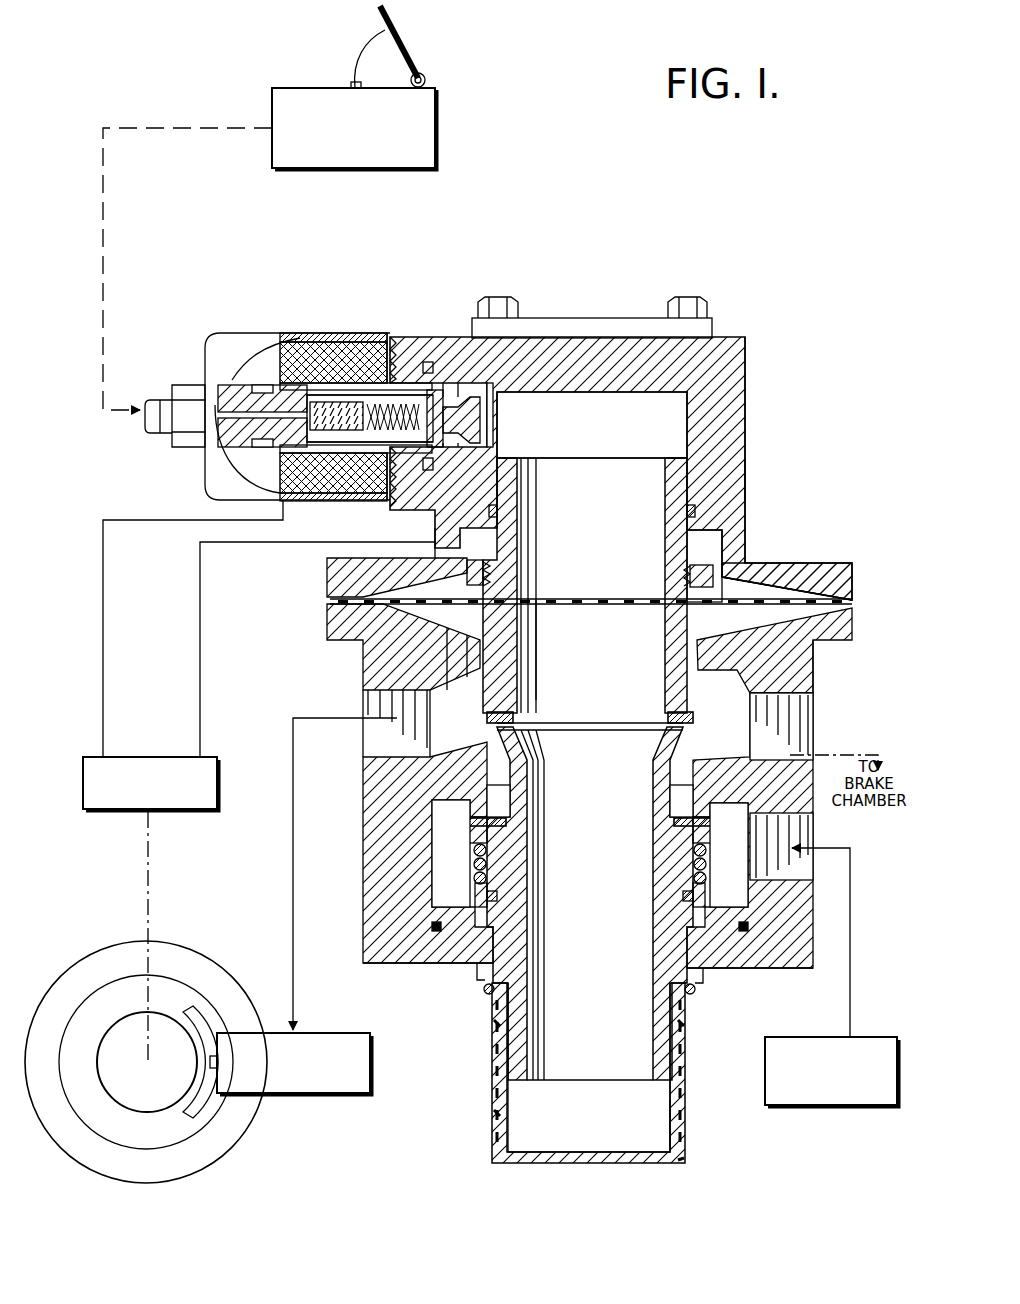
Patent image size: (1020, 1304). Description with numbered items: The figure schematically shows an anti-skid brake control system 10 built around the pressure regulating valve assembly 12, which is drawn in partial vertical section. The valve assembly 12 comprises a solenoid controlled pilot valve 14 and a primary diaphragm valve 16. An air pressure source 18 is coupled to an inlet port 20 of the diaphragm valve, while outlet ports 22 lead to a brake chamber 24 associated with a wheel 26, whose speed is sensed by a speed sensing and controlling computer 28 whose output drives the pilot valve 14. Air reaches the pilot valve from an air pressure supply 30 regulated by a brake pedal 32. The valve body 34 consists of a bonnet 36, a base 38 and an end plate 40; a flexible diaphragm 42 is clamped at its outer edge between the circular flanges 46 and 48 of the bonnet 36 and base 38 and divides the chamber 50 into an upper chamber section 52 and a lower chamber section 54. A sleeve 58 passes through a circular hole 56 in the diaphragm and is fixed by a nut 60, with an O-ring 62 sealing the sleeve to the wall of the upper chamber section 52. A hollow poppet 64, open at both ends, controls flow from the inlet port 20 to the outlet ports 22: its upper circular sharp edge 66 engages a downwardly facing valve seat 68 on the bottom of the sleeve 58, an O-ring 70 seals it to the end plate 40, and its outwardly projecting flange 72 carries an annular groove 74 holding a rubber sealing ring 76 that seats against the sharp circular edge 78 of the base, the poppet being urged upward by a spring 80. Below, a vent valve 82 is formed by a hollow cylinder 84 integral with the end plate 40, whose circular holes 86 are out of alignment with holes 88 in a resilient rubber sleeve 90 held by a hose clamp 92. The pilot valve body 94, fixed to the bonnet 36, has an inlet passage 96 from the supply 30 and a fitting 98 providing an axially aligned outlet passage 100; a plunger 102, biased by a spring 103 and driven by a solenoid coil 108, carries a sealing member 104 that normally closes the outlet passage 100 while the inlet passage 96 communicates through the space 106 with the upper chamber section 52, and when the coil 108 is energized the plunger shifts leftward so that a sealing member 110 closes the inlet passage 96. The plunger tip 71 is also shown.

The anti-skid brake control system 10 is at (626, 262).
The pressure regulating valve assembly 12 is at (750, 358).
The solenoid controlled pilot valve 14 is at (270, 330).
The primary diaphragm valve 16 is at (776, 548).
The air pressure source 18 is at (893, 1013).
The inlet port 20 is at (805, 834).
The outlet ports 22 is at (380, 748).
The brake chamber 24 is at (366, 1013).
The wheel 26 is at (222, 1140).
The speed sensing and controlling computer 28 is at (178, 812).
The air pressure supply 30 is at (298, 67).
The brake pedal 32 is at (396, 32).
The valve body 34 is at (752, 410).
The bonnet 36 is at (748, 478).
The base 38 is at (815, 938).
The end plate 40 is at (780, 972).
The flexible diaphragm 42 is at (757, 603).
The circular flange of the bonnet 46 is at (853, 588).
The circular flange of the base 48 is at (835, 640).
The chamber 50 is at (660, 438).
The upper chamber section 52 is at (707, 545).
The lower chamber section 54 is at (742, 620).
The circular hole 56 is at (506, 602).
The sleeve 58 is at (512, 650).
The nut 60 is at (492, 565).
The O-ring 62 is at (686, 512).
The poppet 64 is at (672, 788).
The upper circular sharp edge 66 is at (586, 726).
The valve seat 68 is at (688, 722).
The O-ring 70 is at (497, 897).
The plunger tip 71 is at (462, 412).
The outwardly projecting flange 72 is at (708, 848).
The annular groove 74 is at (490, 838).
The rubber sealing ring 76 is at (702, 828).
The sharp circular edge 78 is at (500, 815).
The spring 80 is at (472, 862).
The vent valve 82 is at (488, 1057).
The hollow cylinder 84 is at (502, 1080).
The circular holes 86 is at (496, 1113).
The holes 88 is at (494, 1023).
The resilient rubber sleeve 90 is at (686, 1122).
The hose clamp 92 is at (694, 990).
The pilot valve body 94 is at (230, 378).
The inlet passage 96 is at (245, 415).
The fitting 98 is at (472, 318).
The outlet passage 100 is at (448, 432).
The plunger 102 is at (348, 394).
The spring 103 is at (462, 384).
The sealing member 104 is at (421, 440).
The space 106 is at (462, 447).
The solenoid coil 108 is at (325, 500).
The sealing member 110 is at (283, 493).